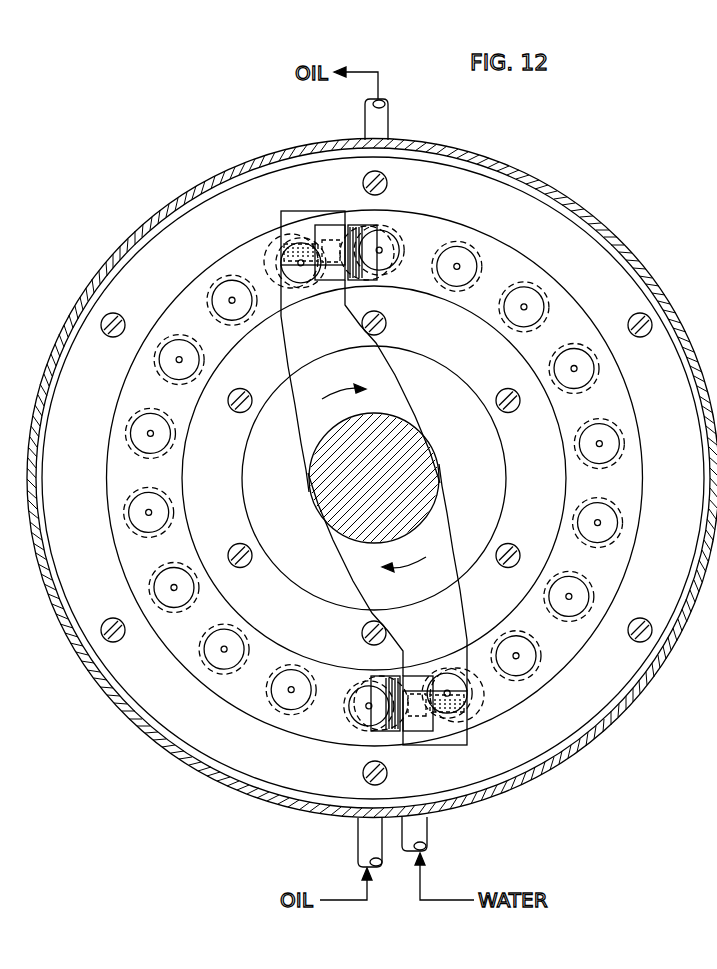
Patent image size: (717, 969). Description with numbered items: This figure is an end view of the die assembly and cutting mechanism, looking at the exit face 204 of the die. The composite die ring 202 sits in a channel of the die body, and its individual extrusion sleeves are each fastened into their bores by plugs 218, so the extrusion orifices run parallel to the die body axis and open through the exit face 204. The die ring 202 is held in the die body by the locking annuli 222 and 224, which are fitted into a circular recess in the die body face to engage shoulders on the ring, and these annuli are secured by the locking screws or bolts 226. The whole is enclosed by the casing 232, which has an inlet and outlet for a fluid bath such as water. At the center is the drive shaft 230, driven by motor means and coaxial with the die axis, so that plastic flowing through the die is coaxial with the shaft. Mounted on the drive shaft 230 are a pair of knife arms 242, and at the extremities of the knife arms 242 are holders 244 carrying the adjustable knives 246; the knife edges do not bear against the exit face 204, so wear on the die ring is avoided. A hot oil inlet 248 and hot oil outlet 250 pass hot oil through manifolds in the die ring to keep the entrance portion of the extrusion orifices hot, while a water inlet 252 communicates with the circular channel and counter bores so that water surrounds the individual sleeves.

The die ring 202 is at (492, 283).
The exit face 204 is at (609, 400).
The plugs 218 is at (132, 433).
The locking annulus 222 is at (94, 476).
The locking annulus 224 is at (229, 484).
The locking screws or bolts 226 is at (116, 313).
The drive shaft 230 is at (425, 467).
The casing 232 is at (80, 652).
The knife arms 242 is at (302, 350).
The holders 244 is at (346, 226).
The knives 246 is at (382, 247).
The hot oil inlet 248 is at (357, 843).
The hot oil outlet 250 is at (389, 119).
The water inlet 252 is at (428, 832).